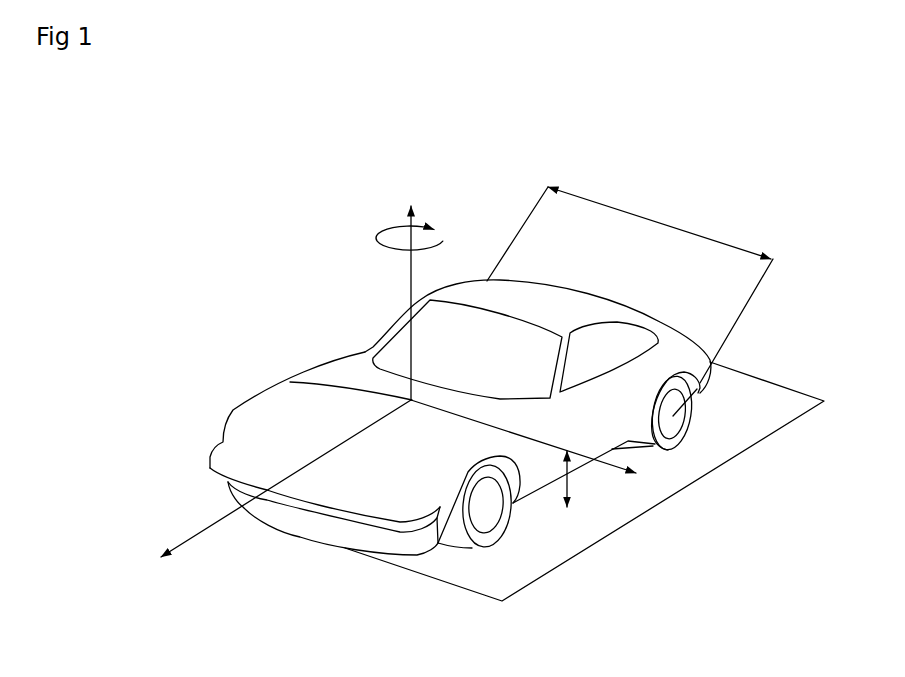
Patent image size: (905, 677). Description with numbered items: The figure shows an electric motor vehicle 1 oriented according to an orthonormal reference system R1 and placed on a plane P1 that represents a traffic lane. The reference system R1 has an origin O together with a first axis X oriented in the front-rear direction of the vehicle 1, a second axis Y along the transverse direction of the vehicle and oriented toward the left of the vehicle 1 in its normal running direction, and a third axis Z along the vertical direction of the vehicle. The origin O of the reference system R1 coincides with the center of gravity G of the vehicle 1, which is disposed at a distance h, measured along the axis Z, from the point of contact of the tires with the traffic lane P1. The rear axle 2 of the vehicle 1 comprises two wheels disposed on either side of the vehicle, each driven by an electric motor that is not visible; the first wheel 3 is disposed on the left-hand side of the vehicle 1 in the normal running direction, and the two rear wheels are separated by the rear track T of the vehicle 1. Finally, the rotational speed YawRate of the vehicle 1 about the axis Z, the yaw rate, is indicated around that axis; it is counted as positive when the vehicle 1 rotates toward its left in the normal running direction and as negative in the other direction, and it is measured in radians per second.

The electric motor vehicle 1 is at (436, 414).
The rear axle 2 is at (633, 296).
The first wheel 3 is at (690, 434).
The orthonormal reference system R1 is at (448, 168).
The rear track T is at (630, 301).
The distance h is at (568, 478).
The plane P1 is at (777, 385).
The center of gravity G is at (410, 401).
The first axis X is at (284, 490).
The second axis Y is at (532, 449).
The third axis Z is at (420, 294).
The rotational speed YawRate is at (393, 249).